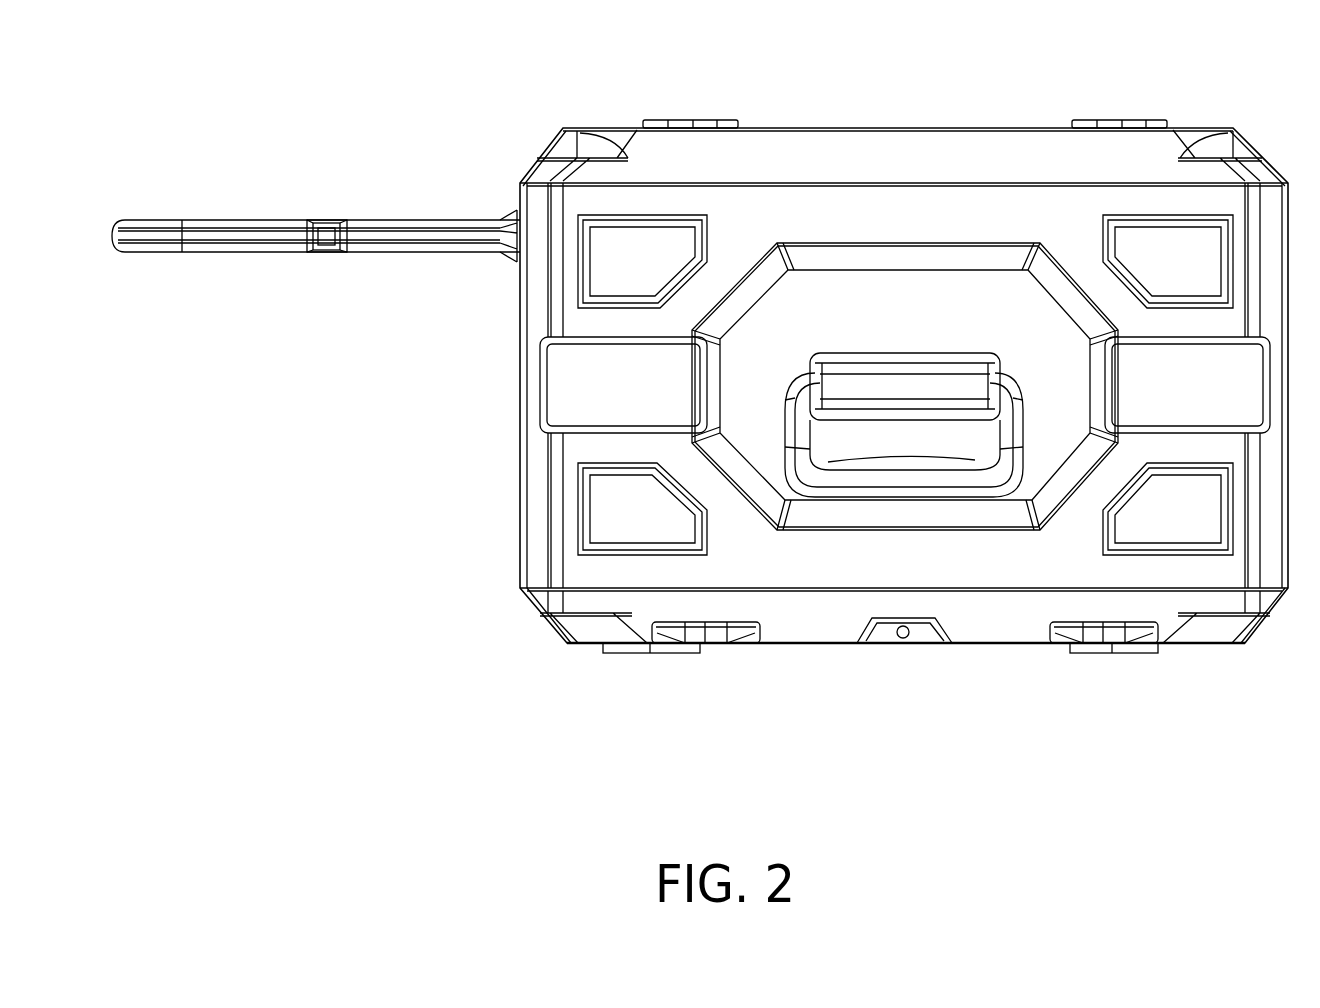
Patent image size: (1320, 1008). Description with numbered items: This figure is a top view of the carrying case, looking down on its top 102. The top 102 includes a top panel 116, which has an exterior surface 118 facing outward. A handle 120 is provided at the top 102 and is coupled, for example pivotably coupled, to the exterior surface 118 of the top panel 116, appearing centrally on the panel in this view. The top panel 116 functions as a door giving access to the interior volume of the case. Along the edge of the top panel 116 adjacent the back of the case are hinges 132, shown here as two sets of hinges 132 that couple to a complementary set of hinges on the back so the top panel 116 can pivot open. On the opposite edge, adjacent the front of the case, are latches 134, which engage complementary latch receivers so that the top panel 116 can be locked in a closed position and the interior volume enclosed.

The top 102 is at (505, 154).
The top panel 116 is at (949, 292).
The exterior surface 118 is at (846, 229).
The handle 120 is at (904, 492).
The hinges 132 is at (683, 106).
The latches 134 is at (706, 652).